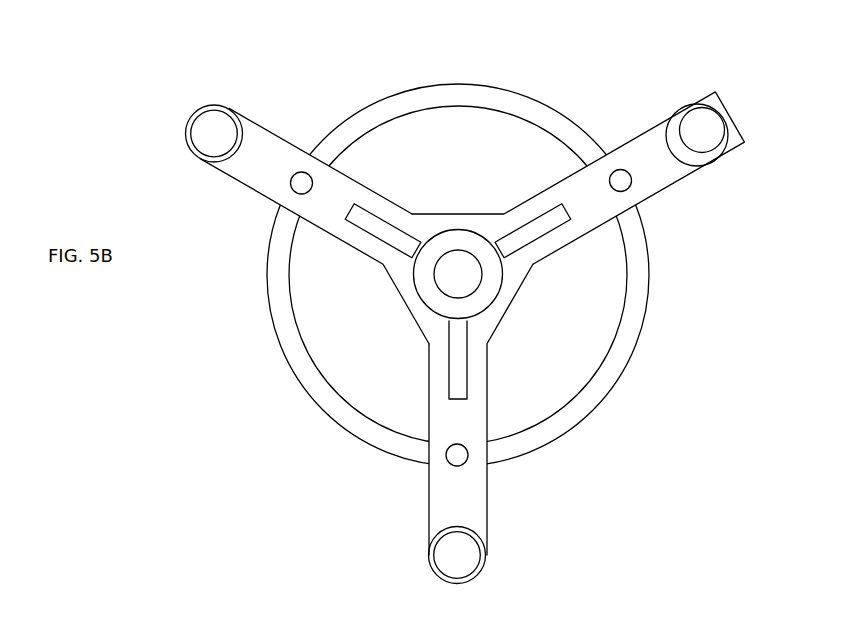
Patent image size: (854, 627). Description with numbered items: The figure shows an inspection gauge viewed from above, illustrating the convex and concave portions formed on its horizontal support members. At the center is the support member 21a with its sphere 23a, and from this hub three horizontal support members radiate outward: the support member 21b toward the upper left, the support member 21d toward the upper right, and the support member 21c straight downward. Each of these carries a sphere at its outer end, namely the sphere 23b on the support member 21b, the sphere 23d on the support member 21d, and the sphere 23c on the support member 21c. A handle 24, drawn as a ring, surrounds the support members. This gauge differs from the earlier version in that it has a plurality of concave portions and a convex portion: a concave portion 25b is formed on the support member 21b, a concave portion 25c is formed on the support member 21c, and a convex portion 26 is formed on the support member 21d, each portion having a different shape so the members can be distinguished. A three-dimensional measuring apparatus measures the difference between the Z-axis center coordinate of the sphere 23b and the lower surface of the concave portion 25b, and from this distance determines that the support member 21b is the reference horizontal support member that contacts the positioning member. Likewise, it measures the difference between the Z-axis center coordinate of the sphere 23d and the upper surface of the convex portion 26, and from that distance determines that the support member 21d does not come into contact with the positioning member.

The support member 21a is at (487, 234).
The support member 21b is at (304, 198).
The support member 21c is at (465, 423).
The support member 21d is at (583, 157).
The sphere 23a is at (448, 251).
The sphere 23b is at (226, 108).
The sphere 23c is at (486, 555).
The sphere 23d is at (710, 107).
The handle 24 is at (507, 88).
The concave portion 25b is at (302, 171).
The concave portion 25c is at (448, 462).
The convex portion 26 is at (621, 169).